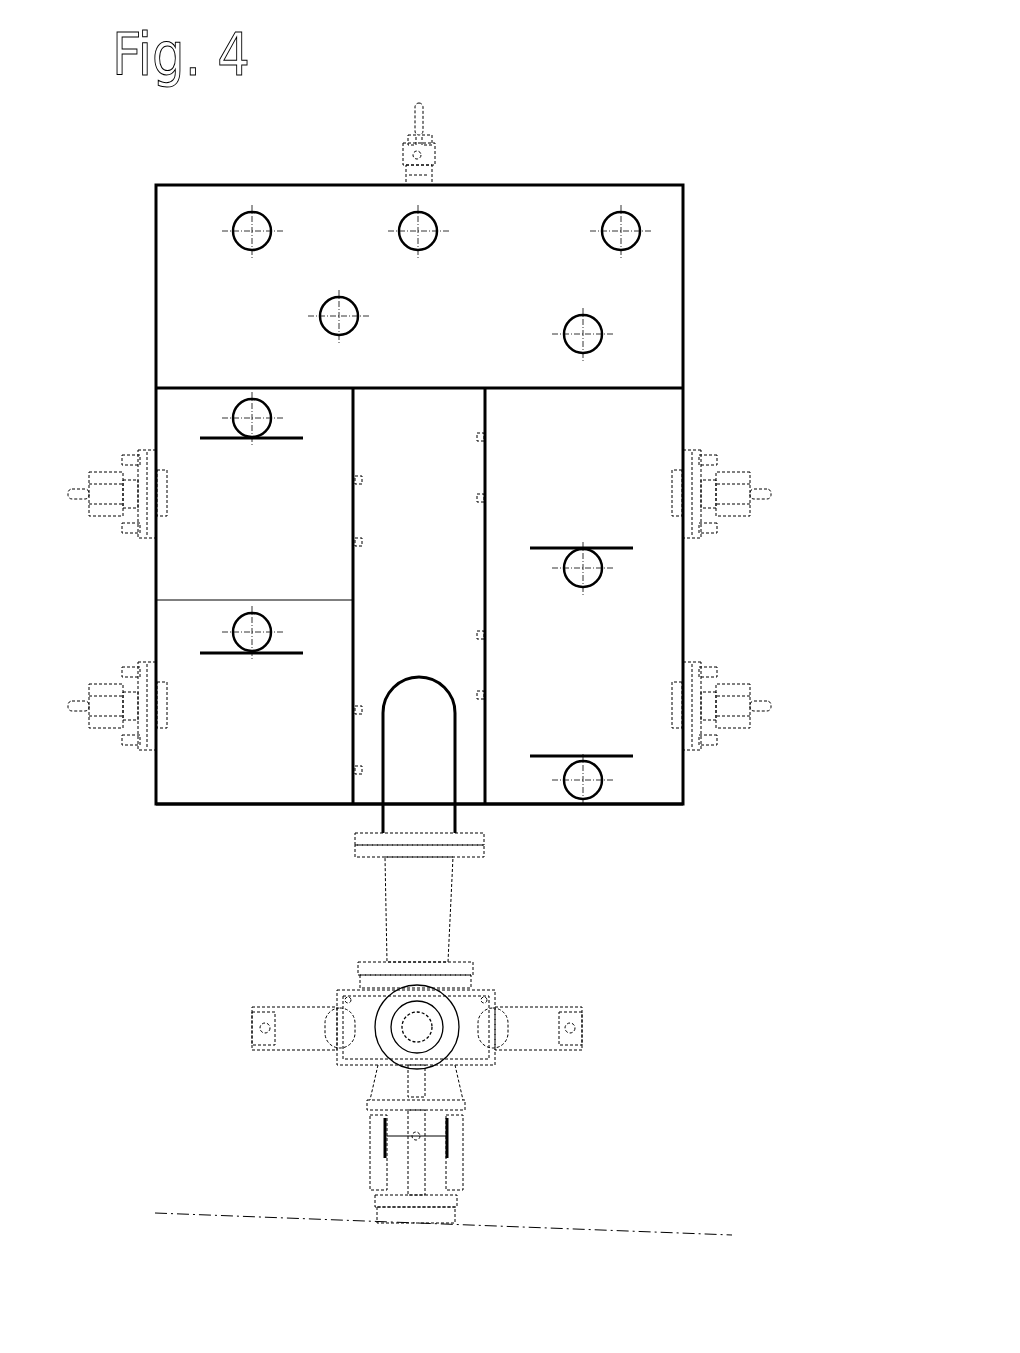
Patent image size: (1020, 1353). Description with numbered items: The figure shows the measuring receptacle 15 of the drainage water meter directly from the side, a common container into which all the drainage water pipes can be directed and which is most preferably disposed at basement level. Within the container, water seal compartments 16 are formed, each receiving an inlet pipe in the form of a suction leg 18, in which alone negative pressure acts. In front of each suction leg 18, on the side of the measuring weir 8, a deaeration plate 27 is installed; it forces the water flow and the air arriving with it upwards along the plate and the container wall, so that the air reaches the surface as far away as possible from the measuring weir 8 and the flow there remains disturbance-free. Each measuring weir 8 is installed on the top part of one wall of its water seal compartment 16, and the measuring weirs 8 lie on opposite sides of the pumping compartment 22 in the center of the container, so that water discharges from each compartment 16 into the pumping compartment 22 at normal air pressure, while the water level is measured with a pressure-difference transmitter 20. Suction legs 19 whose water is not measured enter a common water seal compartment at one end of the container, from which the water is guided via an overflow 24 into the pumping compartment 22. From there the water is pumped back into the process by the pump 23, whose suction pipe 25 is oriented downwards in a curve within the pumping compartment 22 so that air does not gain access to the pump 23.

The measuring weir 8 is at (500, 420).
The measuring receptacle 15 is at (419, 521).
The water seal compartment 16 is at (419, 817).
The suction leg 18 is at (331, 525).
The suction leg 19 is at (640, 218).
The pressure-difference transmitter 20 is at (732, 486).
The pumping compartment 22 is at (437, 490).
The pump 23 is at (472, 1017).
The overflow 24 is at (422, 384).
The suction pipe 25 is at (404, 706).
The deaeration plate 27 is at (168, 378).